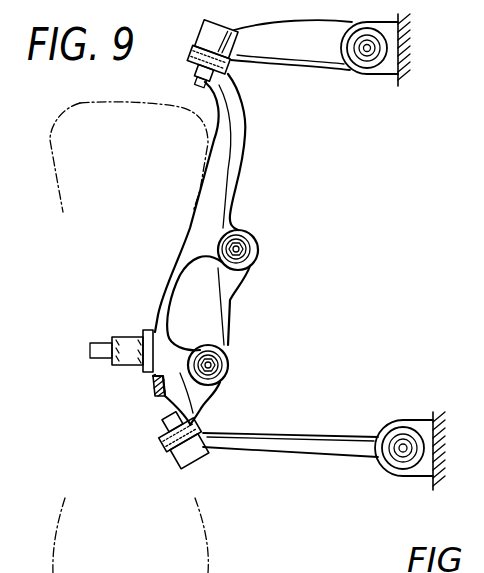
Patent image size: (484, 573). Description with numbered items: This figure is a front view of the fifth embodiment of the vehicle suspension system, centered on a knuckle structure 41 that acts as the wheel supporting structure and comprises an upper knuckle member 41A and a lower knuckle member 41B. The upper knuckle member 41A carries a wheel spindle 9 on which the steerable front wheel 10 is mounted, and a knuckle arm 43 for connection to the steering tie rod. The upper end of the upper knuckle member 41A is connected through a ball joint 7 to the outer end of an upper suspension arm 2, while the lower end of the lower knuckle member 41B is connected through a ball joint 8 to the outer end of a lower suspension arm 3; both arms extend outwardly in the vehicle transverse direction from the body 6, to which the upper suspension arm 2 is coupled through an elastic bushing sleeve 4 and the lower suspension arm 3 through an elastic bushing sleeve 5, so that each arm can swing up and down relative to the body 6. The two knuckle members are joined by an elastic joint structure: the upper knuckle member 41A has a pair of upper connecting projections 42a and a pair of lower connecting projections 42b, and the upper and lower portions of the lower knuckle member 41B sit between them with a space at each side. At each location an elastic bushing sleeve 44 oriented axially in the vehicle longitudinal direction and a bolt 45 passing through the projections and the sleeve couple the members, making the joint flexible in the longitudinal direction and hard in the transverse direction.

The upper suspension arm 2 is at (314, 63).
The lower suspension arm 3 is at (318, 460).
The elastic bushing sleeve 4 is at (360, 60).
The elastic bushing sleeve 5 is at (395, 455).
The body 6 is at (410, 52).
The ball joint 7 is at (186, 54).
The ball joint 8 is at (200, 421).
The wheel spindle 9 is at (123, 352).
The steerable front wheel 10 is at (50, 160).
The knuckle structure 41 is at (246, 249).
The upper knuckle member 41A is at (180, 283).
The lower knuckle member 41B is at (228, 322).
The upper connecting projections 42a is at (228, 230).
The lower connecting projections 42b is at (228, 349).
The knuckle arm 43 is at (157, 399).
The elastic bushing sleeve 44 is at (246, 240).
The bolt 45 is at (247, 249).